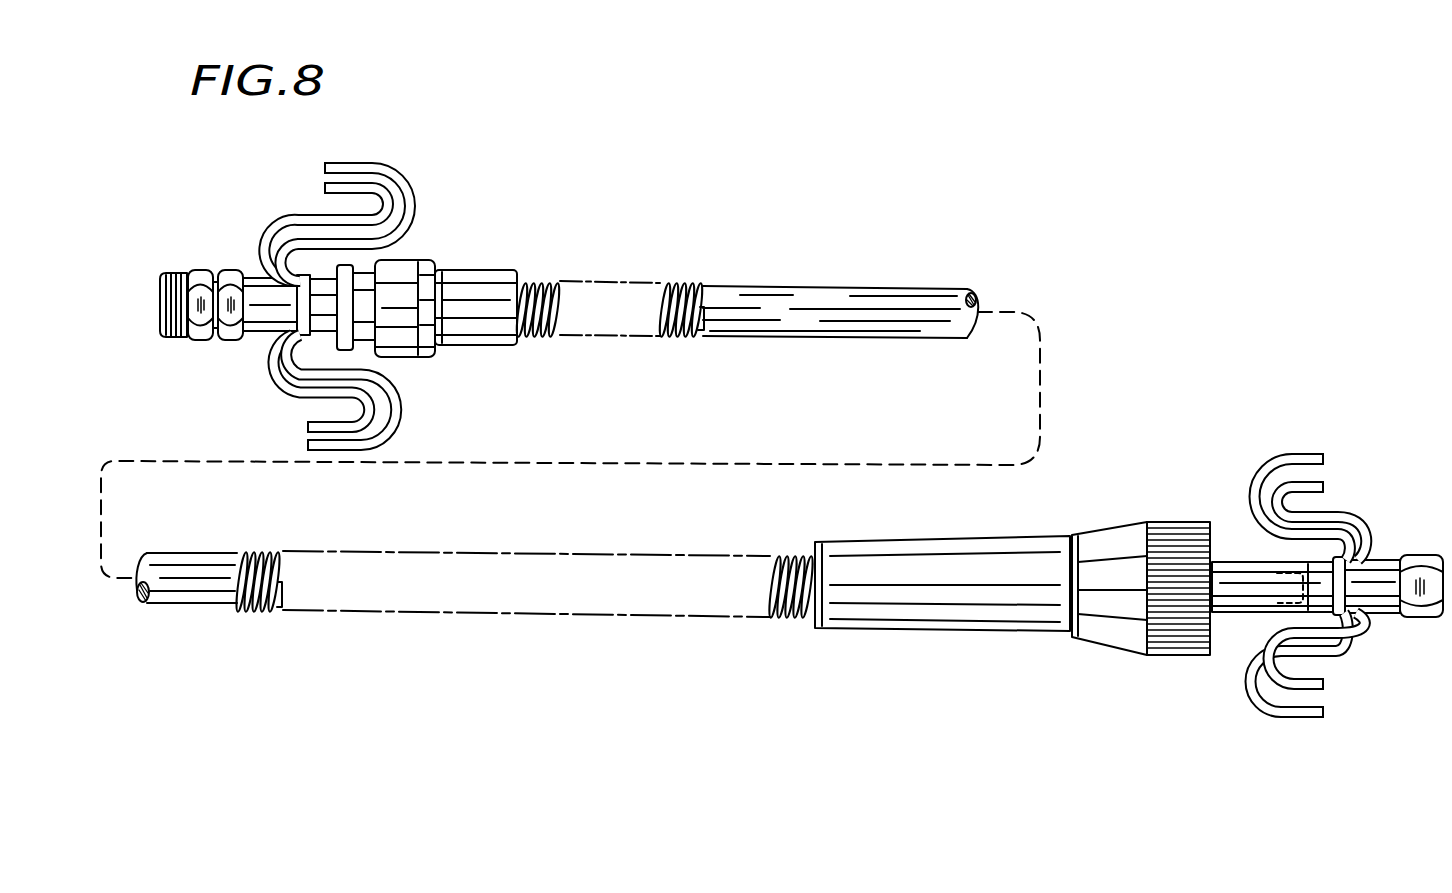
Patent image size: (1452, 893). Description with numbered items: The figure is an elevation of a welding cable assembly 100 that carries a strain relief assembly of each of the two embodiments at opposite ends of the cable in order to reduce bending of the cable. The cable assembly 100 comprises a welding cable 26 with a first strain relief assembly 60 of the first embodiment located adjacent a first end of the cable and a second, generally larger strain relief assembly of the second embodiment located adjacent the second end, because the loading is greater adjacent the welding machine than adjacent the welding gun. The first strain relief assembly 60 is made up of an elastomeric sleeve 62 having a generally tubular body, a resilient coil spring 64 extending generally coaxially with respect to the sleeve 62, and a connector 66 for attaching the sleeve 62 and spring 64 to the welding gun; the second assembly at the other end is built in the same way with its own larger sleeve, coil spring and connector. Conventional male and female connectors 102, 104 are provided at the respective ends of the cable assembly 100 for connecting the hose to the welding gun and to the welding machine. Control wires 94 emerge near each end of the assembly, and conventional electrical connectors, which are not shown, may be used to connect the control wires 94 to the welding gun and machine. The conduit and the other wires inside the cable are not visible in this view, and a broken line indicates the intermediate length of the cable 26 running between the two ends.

The cable assembly 100 is at (1055, 222).
The male connector 102 is at (171, 340).
The female connector 104 is at (1422, 556).
The first strain relief assembly 60 is at (521, 253).
The elastomeric sleeve 62 is at (490, 348).
The resilient coil spring 64 is at (697, 288).
The connector 66 is at (419, 361).
The welding cable 26 is at (927, 288).
The control wires 94 is at (406, 215).